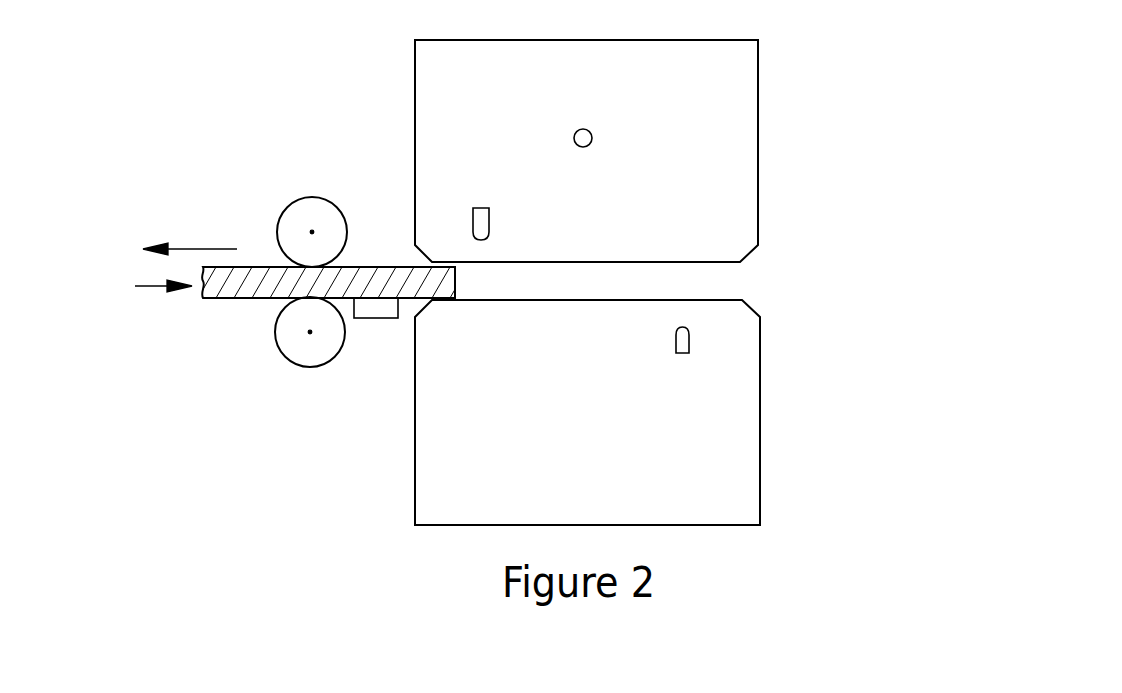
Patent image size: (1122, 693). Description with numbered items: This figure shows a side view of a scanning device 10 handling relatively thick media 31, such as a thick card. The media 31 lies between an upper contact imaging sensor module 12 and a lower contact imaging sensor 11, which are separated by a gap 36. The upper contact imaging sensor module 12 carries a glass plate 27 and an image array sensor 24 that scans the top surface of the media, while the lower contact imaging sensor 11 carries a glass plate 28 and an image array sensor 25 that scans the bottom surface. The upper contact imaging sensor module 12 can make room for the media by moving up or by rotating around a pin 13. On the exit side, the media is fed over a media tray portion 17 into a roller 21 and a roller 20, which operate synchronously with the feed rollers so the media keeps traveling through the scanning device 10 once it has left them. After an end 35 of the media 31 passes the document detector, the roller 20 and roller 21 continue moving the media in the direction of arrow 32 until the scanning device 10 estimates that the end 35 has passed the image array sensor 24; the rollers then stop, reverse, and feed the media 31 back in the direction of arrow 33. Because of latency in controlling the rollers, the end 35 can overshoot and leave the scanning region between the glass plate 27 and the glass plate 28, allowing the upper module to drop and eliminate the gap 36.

The scanning device 10 is at (355, 480).
The lower contact imaging sensor 11 is at (760, 487).
The upper contact imaging sensor module 12 is at (759, 103).
The pin 13 is at (592, 134).
The media tray portion 17 is at (366, 318).
The roller 20 is at (293, 367).
The roller 21 is at (311, 197).
The image array sensor 24 is at (482, 205).
The image array sensor 25 is at (683, 357).
The glass plate 27 is at (749, 262).
The glass plate 28 is at (738, 310).
The media 31 is at (230, 292).
The arrow 32 is at (200, 249).
The arrow 33 is at (147, 288).
The end of media 35 is at (455, 273).
The gap 36 is at (728, 287).